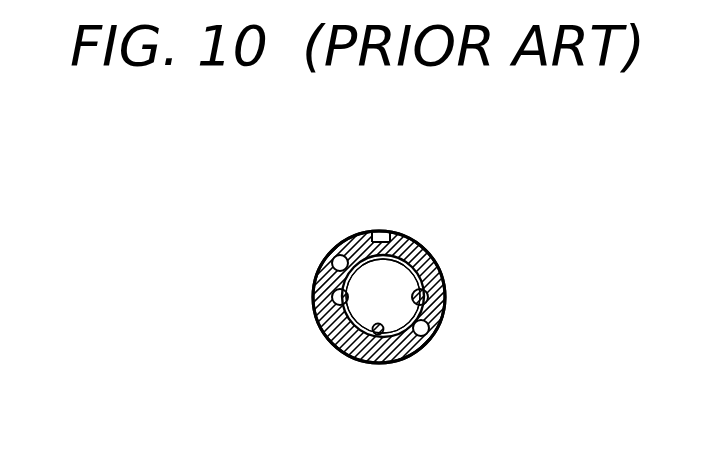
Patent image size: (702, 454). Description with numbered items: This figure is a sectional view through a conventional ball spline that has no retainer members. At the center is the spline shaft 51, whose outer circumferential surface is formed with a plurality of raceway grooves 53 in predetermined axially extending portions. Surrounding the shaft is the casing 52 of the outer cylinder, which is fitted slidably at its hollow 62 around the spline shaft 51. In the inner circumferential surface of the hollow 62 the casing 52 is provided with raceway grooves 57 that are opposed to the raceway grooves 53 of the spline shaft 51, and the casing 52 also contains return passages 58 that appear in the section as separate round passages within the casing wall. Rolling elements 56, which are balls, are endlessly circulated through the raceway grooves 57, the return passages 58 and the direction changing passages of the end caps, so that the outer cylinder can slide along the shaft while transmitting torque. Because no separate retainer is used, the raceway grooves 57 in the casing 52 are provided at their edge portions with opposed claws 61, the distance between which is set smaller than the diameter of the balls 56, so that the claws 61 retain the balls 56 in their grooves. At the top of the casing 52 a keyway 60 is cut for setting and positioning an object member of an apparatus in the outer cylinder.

The spline shaft 51 is at (365, 312).
The casing 52 is at (421, 233).
The raceway grooves 53 is at (332, 298).
The rolling elements 56 is at (332, 294).
The raceway grooves 57 is at (428, 297).
The return passages 58 is at (335, 255).
The keyway 60 is at (381, 230).
The claws 61 is at (432, 262).
The hollow 62 is at (379, 335).